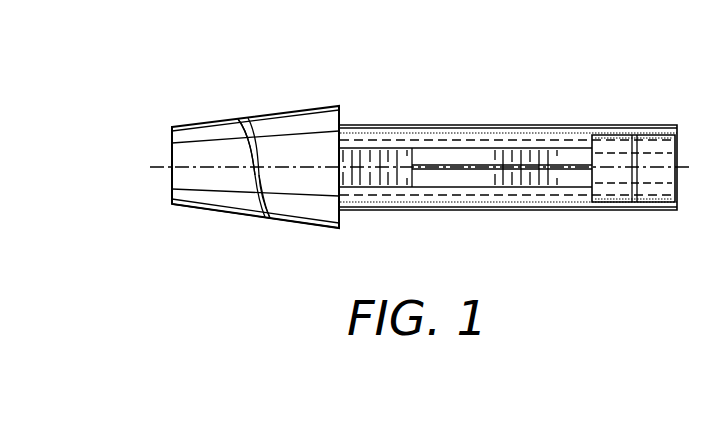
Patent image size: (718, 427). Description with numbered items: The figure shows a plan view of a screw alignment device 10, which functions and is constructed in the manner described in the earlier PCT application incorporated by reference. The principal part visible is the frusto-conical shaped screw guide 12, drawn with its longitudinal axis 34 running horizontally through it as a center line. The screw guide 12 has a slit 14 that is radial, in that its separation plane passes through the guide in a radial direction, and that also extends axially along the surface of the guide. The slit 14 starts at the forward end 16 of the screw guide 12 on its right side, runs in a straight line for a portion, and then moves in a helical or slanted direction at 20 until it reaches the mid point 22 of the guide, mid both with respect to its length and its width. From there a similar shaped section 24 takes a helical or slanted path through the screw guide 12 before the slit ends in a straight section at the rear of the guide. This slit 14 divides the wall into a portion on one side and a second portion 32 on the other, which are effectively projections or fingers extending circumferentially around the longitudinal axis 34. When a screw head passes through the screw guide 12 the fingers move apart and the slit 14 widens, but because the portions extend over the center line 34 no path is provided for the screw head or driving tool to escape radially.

The screw alignment device 10 is at (568, 97).
The screw guide 12 is at (295, 108).
The slit 14 is at (245, 197).
The forward end 16 is at (172, 140).
The helical or slanted direction 20 is at (240, 142).
The mid point 22 is at (265, 152).
The similar shaped section 24 is at (266, 198).
The second portion 32 is at (322, 143).
The longitudinal axis 34 is at (160, 167).